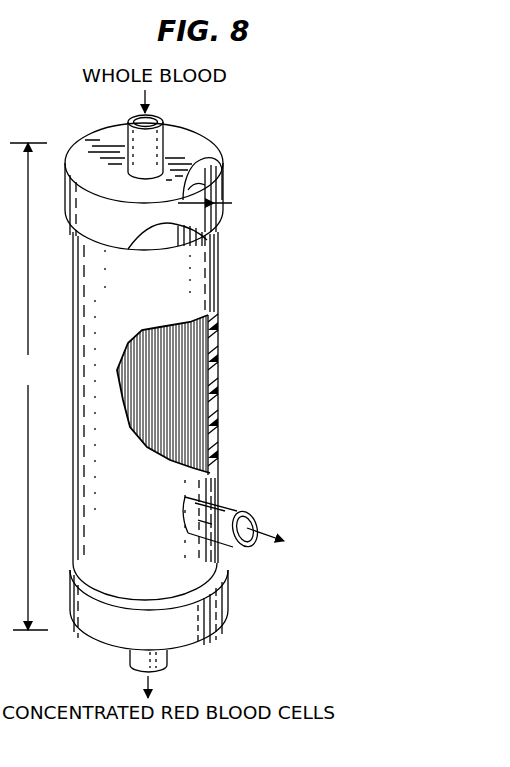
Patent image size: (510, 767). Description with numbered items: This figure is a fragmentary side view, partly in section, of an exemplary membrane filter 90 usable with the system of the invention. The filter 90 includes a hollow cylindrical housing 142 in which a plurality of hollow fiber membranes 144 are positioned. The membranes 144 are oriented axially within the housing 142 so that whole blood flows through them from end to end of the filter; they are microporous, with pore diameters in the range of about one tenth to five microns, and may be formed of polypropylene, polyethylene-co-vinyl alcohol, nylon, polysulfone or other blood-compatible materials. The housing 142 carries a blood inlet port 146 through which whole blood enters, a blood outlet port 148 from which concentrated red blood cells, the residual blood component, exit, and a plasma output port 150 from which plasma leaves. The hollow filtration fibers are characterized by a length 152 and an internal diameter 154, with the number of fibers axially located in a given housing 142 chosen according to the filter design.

The filter 90 is at (247, 272).
The hollow cylindrical housing 142 is at (195, 236).
The hollow fiber membranes 144 is at (210, 372).
The blood inlet port 146 is at (187, 140).
The blood outlet port 148 is at (108, 645).
The plasma output port 150 is at (252, 513).
The length 152 is at (30, 386).
The internal diameter 154 is at (232, 203).